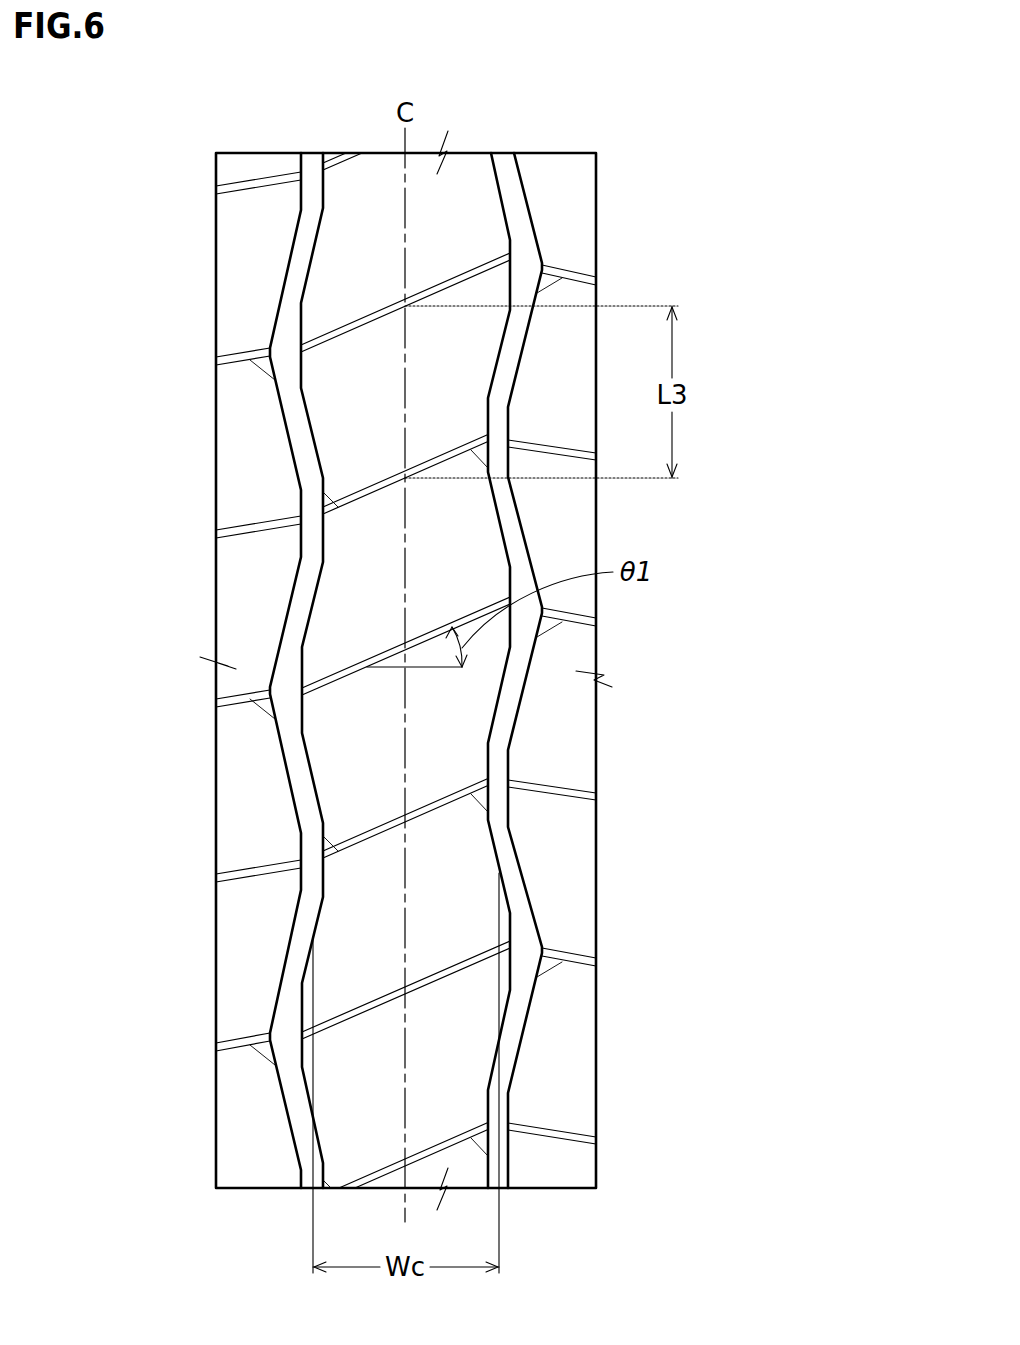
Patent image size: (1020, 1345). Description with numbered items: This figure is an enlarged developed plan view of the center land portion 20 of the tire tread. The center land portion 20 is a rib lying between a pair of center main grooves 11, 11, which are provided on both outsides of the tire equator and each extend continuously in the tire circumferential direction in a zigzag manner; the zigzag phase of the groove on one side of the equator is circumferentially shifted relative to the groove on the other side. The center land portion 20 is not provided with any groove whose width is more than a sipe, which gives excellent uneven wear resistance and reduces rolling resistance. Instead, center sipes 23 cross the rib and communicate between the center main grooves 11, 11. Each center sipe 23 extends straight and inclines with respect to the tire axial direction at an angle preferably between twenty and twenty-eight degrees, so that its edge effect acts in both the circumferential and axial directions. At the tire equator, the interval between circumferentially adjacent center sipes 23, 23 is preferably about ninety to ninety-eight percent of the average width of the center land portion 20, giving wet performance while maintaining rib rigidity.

The center main groove 11 is at (312, 192).
The center land portion 20 is at (377, 213).
The center sipe 23 is at (453, 287).